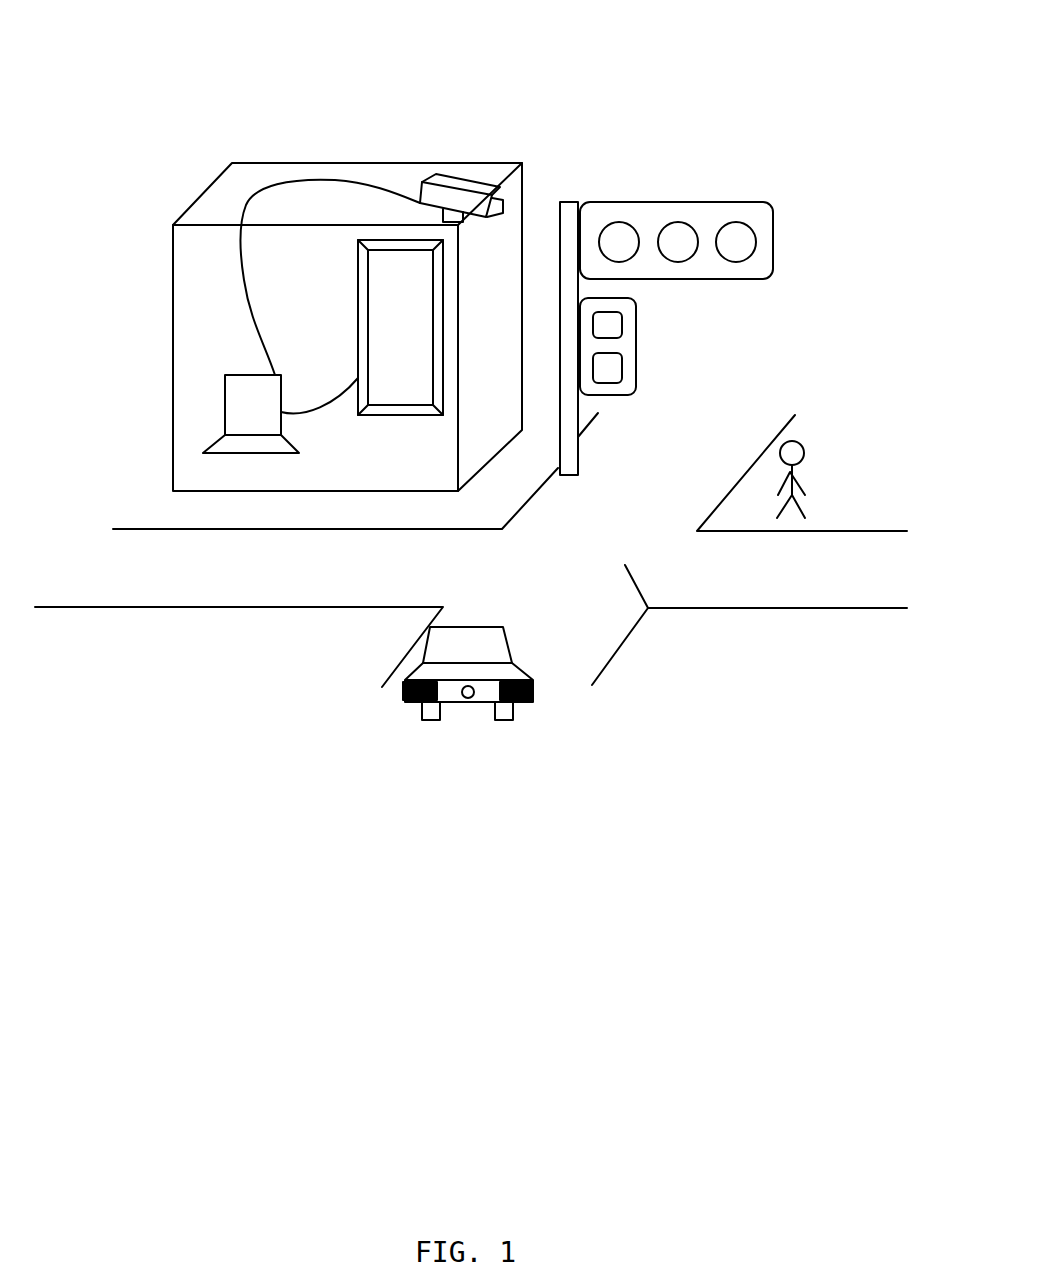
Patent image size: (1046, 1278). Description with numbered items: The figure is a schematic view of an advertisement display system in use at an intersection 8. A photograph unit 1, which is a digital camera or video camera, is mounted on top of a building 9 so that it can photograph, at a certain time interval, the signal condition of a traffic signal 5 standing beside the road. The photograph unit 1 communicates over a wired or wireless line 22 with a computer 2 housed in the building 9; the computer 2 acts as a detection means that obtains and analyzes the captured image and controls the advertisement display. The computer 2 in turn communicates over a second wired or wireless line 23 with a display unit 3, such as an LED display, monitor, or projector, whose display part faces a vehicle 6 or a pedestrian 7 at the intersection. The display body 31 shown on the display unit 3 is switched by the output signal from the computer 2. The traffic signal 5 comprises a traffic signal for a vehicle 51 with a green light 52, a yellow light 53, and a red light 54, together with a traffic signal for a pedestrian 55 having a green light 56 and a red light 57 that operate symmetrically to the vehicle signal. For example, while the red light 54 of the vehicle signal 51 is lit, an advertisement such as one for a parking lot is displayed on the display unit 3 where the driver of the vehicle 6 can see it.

The photograph unit 1 is at (458, 195).
The computer 2 is at (238, 407).
The display unit 3 is at (284, 486).
The display body 31 is at (423, 350).
The traffic signal 5 is at (735, 206).
The traffic signal for a vehicle 51 is at (757, 212).
The green light 52 is at (622, 242).
The yellow light 53 is at (676, 242).
The red light 54 is at (740, 242).
The traffic signal for a pedestrian 55 is at (630, 346).
The green light 56 is at (607, 370).
The red light 57 is at (610, 323).
The vehicle 6 is at (447, 647).
The pedestrian 7 is at (828, 468).
The intersection 8 is at (648, 608).
The building 9 is at (190, 282).
The wired or wireless line 22 is at (323, 180).
The wired or wireless line 23 is at (360, 378).